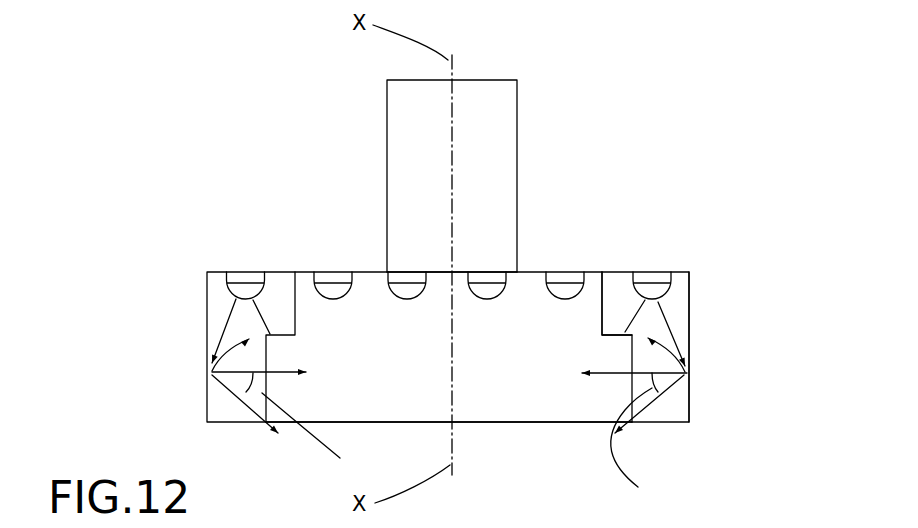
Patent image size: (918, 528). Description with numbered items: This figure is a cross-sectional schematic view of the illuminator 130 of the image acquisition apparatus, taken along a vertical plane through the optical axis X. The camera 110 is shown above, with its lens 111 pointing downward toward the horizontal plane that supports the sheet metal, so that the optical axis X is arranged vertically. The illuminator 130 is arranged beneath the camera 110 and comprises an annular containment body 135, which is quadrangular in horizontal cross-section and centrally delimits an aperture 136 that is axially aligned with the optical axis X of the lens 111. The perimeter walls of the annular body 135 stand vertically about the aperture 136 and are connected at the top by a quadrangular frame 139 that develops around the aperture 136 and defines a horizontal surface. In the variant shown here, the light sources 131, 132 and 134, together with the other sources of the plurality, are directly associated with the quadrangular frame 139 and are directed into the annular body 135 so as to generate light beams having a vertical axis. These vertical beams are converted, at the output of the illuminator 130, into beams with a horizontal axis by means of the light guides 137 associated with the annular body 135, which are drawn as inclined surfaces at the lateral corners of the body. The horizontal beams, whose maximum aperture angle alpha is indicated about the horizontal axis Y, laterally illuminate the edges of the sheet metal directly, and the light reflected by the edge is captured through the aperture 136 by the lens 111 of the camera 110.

The camera 110 is at (535, 110).
The lens 111 is at (434, 268).
The illuminator 130 is at (703, 309).
The light source 131 is at (330, 271).
The light source 132 is at (653, 271).
The light source 134 is at (243, 270).
The annular containment body 135 is at (692, 335).
The aperture 136 is at (482, 363).
The light guide 137 is at (232, 408).
The quadrangular frame 139 is at (614, 270).